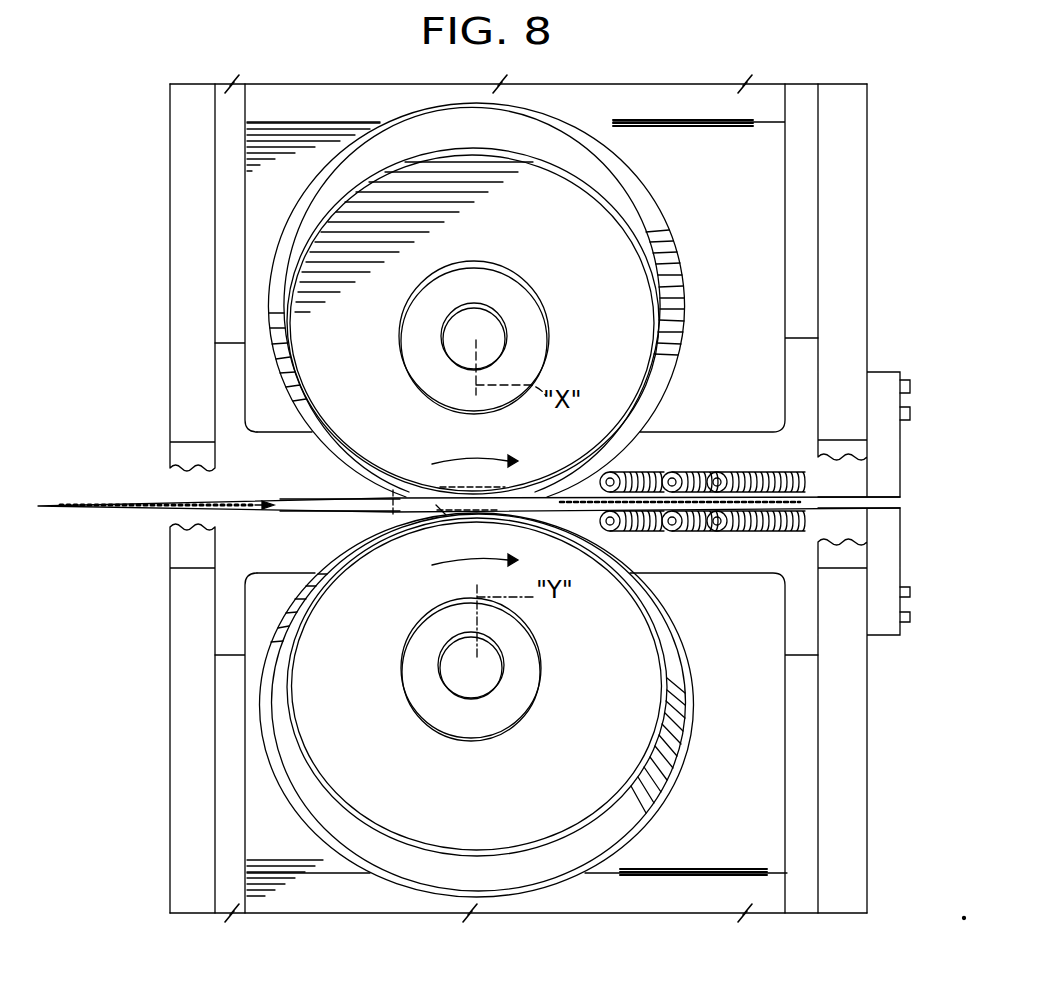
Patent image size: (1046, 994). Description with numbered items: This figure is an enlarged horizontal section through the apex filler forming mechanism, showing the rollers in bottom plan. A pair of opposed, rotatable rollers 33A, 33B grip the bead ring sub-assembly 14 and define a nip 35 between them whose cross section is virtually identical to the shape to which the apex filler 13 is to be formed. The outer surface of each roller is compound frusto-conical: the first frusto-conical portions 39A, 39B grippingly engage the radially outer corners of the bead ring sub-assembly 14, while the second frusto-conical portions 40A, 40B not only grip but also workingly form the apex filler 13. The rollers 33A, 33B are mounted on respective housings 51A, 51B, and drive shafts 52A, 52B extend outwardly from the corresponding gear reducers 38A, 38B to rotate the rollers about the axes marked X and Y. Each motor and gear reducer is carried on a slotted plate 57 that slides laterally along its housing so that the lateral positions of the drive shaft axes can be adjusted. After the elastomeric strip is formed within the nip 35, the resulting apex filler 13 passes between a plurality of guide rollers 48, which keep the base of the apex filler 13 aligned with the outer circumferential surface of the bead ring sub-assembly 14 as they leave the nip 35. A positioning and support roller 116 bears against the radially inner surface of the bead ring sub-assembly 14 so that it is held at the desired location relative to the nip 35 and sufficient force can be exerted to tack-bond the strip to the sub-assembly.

The apex filler 13 is at (116, 487).
The bead ring sub-assembly 14 is at (297, 487).
The nip 35 is at (477, 482).
The roller 116 is at (440, 512).
The roller 33A is at (642, 362).
The roller 33B is at (634, 662).
The gear reducer 38A is at (250, 293).
The gear reducer 38B is at (260, 822).
The first frusto-conical portion 39A is at (404, 163).
The first frusto-conical portion 39B is at (513, 847).
The second frusto-conical portion 40A is at (618, 178).
The second frusto-conical portion 40B is at (672, 740).
The guide rollers 48 is at (730, 473).
The housing 51A is at (176, 231).
The housing 51B is at (156, 734).
The drive shaft 52A is at (498, 343).
The drive shaft 52B is at (463, 675).
The slotted plate 57 is at (808, 243).